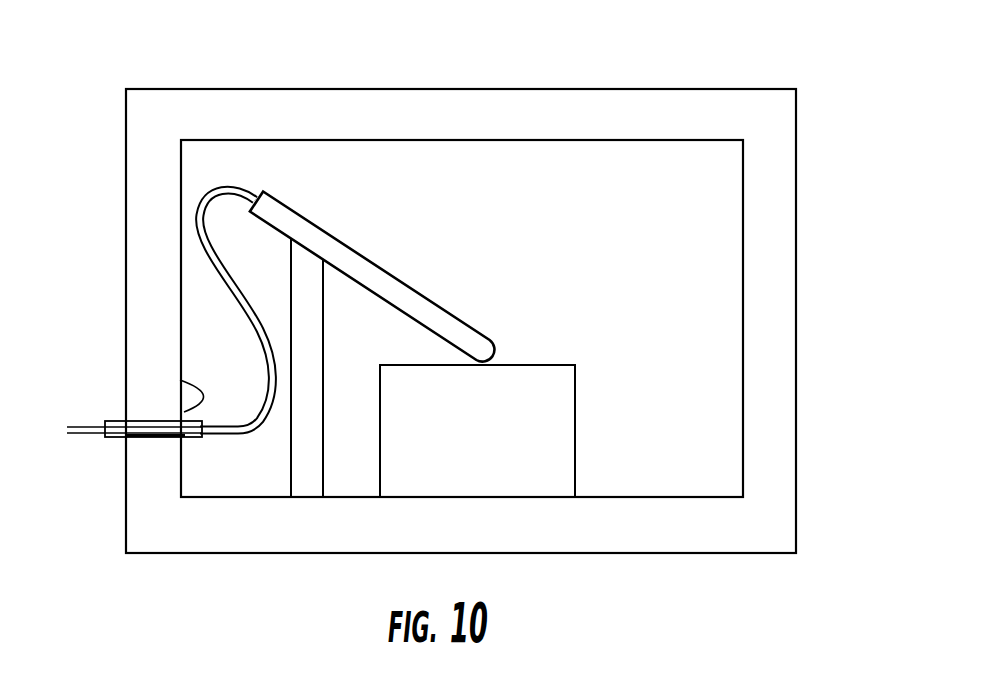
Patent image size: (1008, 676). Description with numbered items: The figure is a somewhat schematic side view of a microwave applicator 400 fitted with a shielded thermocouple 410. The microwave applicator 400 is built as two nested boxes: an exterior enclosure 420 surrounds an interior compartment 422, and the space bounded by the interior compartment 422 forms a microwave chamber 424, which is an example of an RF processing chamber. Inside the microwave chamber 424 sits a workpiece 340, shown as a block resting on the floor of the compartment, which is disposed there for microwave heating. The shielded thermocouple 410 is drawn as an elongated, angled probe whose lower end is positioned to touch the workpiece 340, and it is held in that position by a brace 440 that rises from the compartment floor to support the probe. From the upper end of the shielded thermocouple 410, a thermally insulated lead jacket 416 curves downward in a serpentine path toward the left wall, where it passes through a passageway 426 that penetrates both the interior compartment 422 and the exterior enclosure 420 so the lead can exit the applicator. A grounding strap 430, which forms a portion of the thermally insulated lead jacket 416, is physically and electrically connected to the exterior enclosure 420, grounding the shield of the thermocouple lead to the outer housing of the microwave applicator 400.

The microwave applicator 400 is at (812, 176).
The shielded thermocouple 410 is at (403, 257).
The thermally insulated lead jacket 416 is at (210, 262).
The exterior enclosure 420 is at (797, 310).
The interior compartment 422 is at (742, 250).
The microwave chamber 424 is at (675, 314).
The passageway 426 is at (120, 440).
The grounding strap 430 is at (242, 427).
The brace 440 is at (324, 382).
The workpiece 340 is at (576, 450).